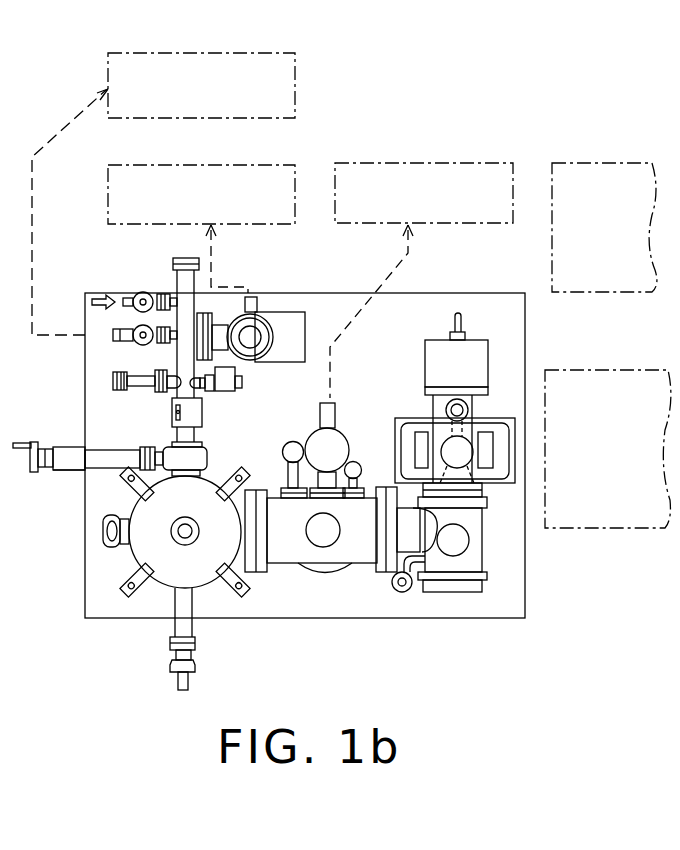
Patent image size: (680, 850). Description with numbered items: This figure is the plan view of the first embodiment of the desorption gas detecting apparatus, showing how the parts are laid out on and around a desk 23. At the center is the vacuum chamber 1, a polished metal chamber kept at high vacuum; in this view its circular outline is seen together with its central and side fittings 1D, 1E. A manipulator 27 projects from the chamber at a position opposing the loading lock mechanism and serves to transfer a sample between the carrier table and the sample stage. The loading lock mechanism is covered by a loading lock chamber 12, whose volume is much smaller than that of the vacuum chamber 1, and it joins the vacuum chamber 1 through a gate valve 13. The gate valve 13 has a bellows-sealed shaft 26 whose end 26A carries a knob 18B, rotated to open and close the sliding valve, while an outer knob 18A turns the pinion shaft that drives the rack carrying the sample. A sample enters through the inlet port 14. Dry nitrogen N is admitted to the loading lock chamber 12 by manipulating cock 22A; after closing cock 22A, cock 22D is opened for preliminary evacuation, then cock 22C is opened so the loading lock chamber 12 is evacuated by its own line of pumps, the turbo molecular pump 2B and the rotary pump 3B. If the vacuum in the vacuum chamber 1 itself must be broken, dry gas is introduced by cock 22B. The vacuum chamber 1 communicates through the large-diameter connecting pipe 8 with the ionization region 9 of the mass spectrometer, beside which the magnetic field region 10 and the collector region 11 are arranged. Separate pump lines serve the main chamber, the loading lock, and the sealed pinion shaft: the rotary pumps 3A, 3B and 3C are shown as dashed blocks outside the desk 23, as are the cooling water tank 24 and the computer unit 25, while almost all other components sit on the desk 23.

The rotary type vacuum pump 3C is at (228, 50).
The vacuum pump 3B is at (228, 163).
The vacuum pump 3A is at (450, 163).
The cooling water tank 24 is at (594, 163).
The computer unit 25 is at (594, 370).
The desk 23 is at (450, 292).
The nitrogen gas supply N is at (82, 305).
The loading lock chamber 12 is at (192, 282).
The cock 22A is at (140, 292).
The cock 22D is at (141, 344).
The cock 22C is at (252, 335).
The turbo molecular pump 2B is at (290, 318).
The outer knob 18A is at (113, 385).
The knob 18B is at (30, 443).
The inlet port 14 is at (190, 412).
The gate valve 13 is at (195, 460).
The shaft 26 is at (105, 468).
The end of shaft 26A is at (75, 471).
The vacuum chamber 1 is at (160, 572).
The chamber port 1D is at (178, 535).
The chamber flange 1E is at (103, 528).
The manipulator 27 is at (185, 625).
The connecting pipe 8 is at (285, 555).
The collector region 11 is at (432, 368).
The magnetic field region 10 is at (415, 418).
The ionization region 9 is at (470, 558).
The cock 22B is at (400, 592).